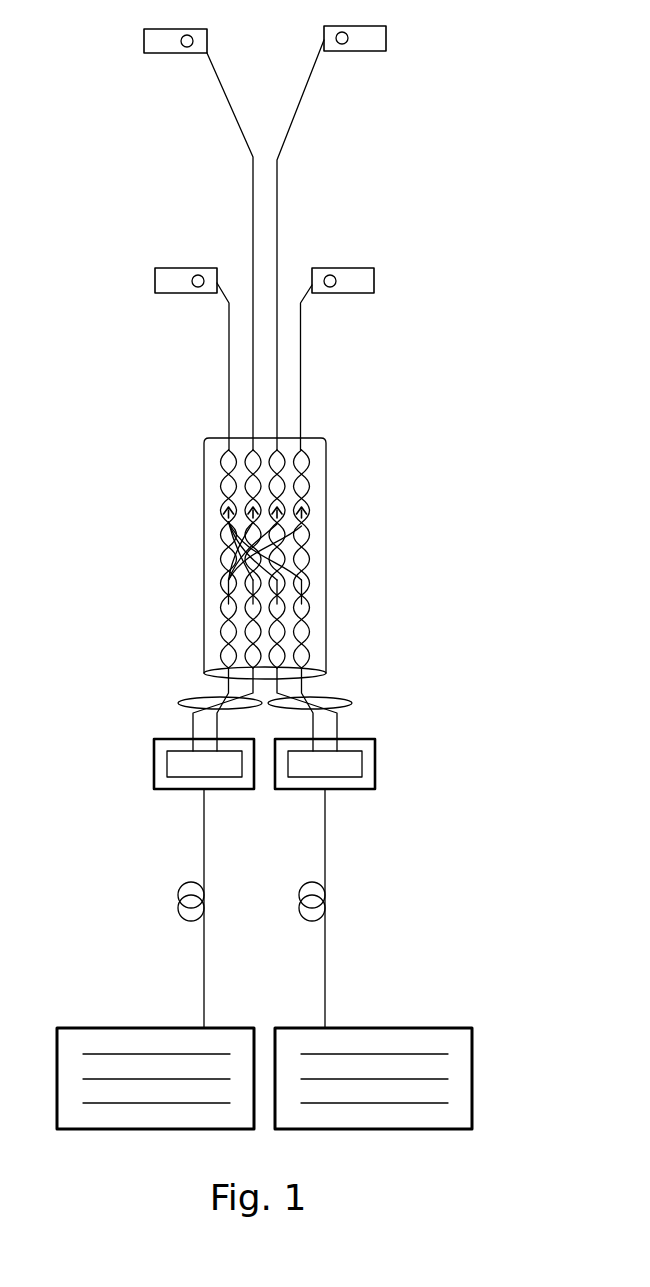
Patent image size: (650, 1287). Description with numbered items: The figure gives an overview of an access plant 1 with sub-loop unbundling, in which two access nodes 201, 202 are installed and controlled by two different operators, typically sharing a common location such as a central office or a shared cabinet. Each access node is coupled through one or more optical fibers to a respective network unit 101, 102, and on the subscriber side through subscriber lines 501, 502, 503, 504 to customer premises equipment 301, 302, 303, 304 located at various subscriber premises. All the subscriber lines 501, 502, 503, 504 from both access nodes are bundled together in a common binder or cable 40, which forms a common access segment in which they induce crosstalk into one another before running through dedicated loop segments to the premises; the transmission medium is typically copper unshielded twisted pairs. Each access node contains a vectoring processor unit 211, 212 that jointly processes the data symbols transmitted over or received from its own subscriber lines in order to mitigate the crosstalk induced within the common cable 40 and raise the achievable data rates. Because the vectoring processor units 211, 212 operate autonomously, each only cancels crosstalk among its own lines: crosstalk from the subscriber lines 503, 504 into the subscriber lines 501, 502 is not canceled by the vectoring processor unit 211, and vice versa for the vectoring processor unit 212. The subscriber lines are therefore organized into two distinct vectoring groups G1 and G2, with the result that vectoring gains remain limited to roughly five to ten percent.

The access plant 1 is at (440, 163).
The network unit 101 is at (57, 1129).
The network unit 102 is at (472, 1129).
The access node 201 is at (186, 788).
The access node 202 is at (342, 788).
The vectoring processor unit 211 is at (154, 764).
The vectoring processor unit 212 is at (375, 764).
The customer premises equipment 301 is at (155, 281).
The customer premises equipment 302 is at (144, 42).
The customer premises equipment 303 is at (386, 38).
The customer premises equipment 304 is at (374, 282).
The common binder or cable 40 is at (327, 562).
The subscriber line 501 is at (229, 405).
The subscriber line 502 is at (253, 222).
The subscriber line 503 is at (277, 222).
The subscriber line 504 is at (302, 403).
The vectoring group G1 is at (178, 703).
The vectoring group G2 is at (352, 703).